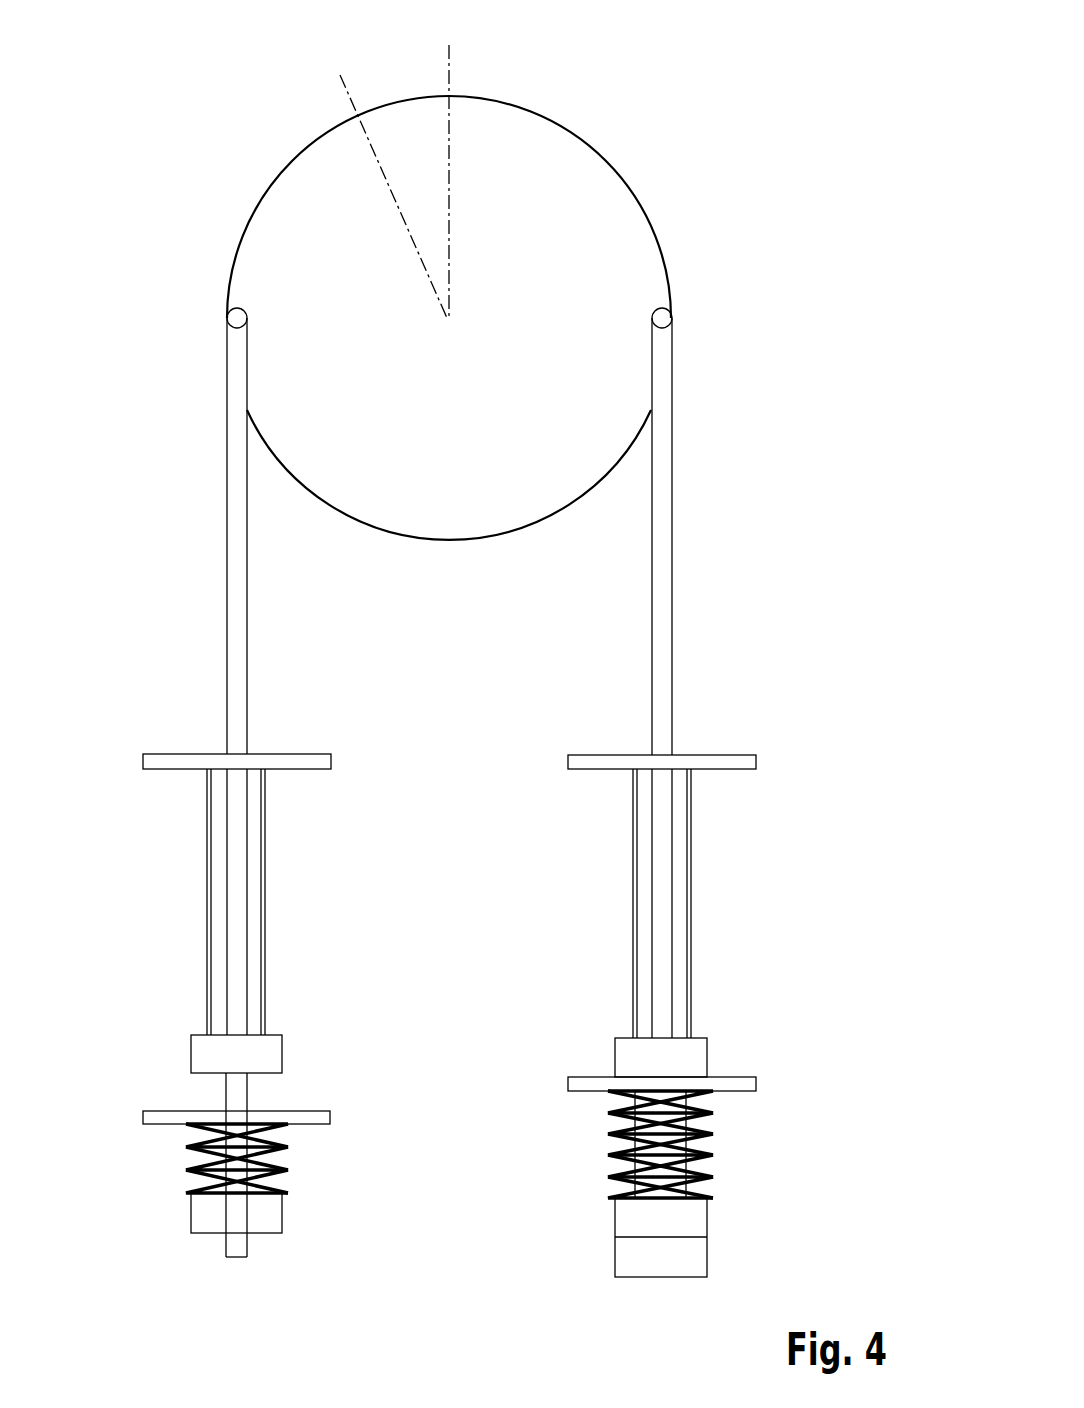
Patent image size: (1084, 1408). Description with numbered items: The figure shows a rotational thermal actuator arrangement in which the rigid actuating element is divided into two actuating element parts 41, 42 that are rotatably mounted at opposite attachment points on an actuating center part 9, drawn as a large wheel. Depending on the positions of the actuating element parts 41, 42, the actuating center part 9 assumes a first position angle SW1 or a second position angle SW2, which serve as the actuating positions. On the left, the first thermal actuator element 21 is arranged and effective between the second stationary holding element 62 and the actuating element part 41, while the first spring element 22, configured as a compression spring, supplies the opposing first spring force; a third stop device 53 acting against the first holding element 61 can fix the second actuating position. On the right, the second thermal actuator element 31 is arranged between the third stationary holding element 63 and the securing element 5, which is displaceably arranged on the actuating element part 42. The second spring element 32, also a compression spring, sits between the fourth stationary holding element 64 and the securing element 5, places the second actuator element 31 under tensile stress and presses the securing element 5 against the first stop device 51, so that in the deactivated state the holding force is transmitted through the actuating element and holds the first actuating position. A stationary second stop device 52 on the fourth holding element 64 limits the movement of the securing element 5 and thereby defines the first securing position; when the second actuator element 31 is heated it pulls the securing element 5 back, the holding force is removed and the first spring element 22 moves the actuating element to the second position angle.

The actuating center part 9 is at (449, 510).
The first position angle SW1 is at (450, 56).
The second position angle SW2 is at (342, 72).
The actuating element part 41 is at (248, 707).
The actuating element part 42 is at (673, 707).
The second stationary holding element 62 is at (332, 760).
The third stationary holding element 63 is at (757, 760).
The first thermal actuator element 21 is at (266, 899).
The second thermal actuator element 31 is at (692, 899).
The first holding element 61 is at (331, 1116).
The first spring element 22 is at (272, 1167).
The third stop device 53 is at (197, 1107).
The securing element 5 is at (708, 1057).
The fourth stationary holding element 64 is at (757, 1083).
The second spring element 32 is at (700, 1150).
The first stop device 51 is at (713, 1237).
The second stop device 52 is at (608, 1073).